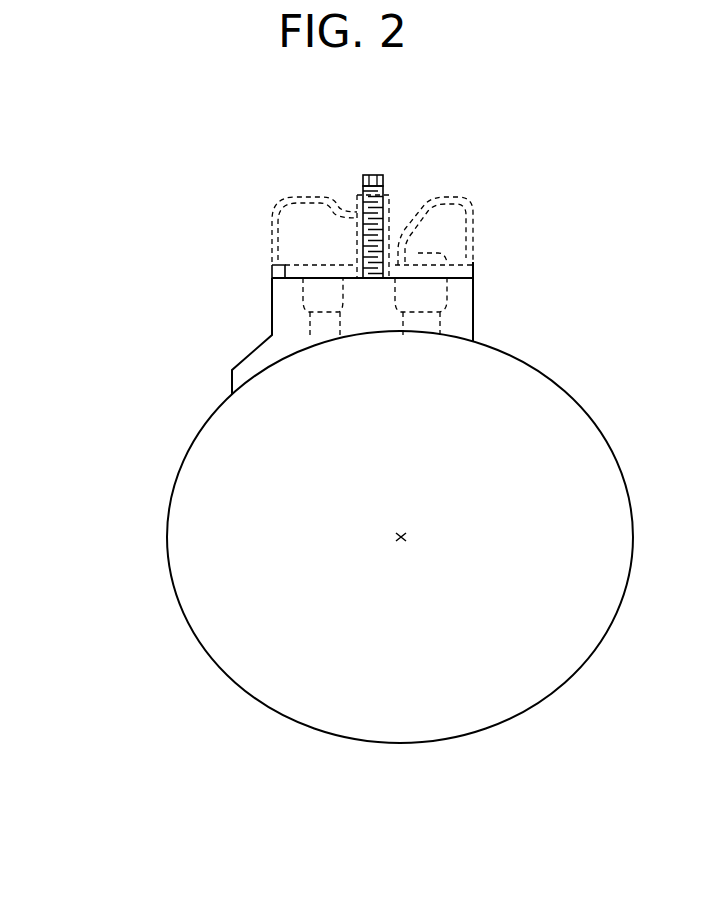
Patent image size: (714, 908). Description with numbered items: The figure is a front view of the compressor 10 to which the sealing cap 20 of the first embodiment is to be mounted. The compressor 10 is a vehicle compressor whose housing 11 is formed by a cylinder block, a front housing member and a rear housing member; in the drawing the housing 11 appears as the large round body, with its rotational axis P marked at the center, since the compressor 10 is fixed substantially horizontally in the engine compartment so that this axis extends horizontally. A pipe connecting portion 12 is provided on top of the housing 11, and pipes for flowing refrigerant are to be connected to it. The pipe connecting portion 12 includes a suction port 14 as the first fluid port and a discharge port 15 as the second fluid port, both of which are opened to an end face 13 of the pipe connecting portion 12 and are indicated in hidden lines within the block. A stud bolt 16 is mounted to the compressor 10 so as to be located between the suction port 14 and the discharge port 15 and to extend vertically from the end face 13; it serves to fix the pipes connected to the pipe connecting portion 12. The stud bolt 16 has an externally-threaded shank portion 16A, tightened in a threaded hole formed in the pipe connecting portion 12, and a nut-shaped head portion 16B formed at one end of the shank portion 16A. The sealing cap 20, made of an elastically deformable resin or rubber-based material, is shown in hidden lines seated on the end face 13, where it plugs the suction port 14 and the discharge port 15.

The compressor 10 is at (137, 445).
The housing 11 is at (580, 398).
The pipe connecting portion 12 is at (271, 300).
The end face 13 is at (289, 262).
The suction port 14 is at (453, 298).
The discharge port 15 is at (300, 311).
The stud bolt 16 is at (360, 208).
The shank portion 16A is at (357, 243).
The head portion 16B is at (384, 183).
The sealing cap 20 is at (433, 197).